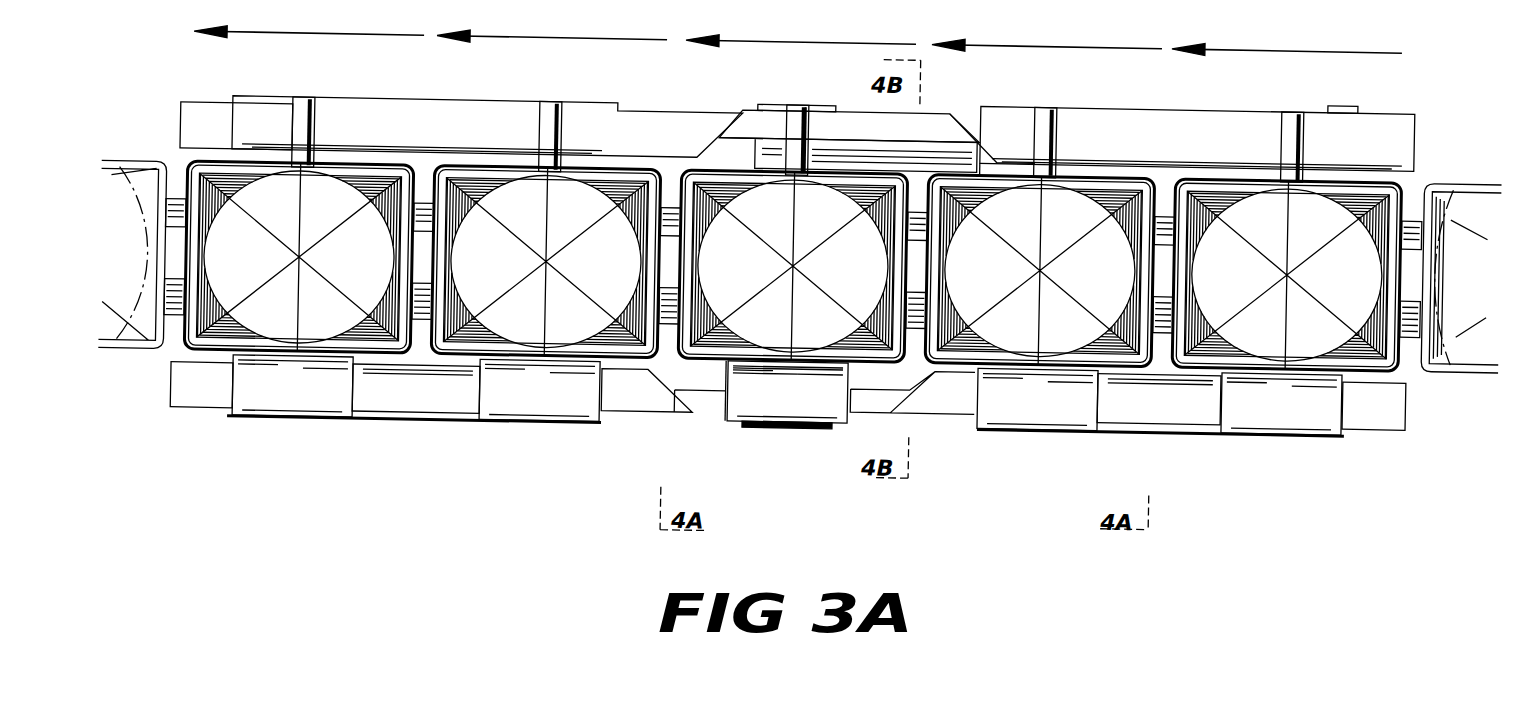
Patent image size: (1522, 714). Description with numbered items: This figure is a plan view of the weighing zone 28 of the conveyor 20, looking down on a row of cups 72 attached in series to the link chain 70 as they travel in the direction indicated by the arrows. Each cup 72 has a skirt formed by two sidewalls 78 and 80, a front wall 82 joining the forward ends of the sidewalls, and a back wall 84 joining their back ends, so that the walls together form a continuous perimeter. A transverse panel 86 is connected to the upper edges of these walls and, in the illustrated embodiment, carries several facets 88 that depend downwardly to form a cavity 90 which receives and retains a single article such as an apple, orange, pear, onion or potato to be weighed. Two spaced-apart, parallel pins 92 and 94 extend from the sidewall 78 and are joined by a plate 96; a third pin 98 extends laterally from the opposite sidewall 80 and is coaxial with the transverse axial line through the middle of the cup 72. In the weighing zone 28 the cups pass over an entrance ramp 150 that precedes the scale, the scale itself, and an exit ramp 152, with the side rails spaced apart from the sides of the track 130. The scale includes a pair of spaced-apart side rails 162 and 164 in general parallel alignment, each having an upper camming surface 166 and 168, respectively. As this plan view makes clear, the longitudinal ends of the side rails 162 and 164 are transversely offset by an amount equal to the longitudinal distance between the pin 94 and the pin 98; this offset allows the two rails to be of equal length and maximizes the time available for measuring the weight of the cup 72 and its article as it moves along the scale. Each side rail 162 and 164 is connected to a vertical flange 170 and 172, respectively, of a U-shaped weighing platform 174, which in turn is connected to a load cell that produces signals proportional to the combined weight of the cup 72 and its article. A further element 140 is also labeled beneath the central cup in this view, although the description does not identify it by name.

The conveyor 20 is at (1425, 154).
The weighing zone 28 is at (808, 503).
The link chain 70 is at (1413, 260).
The cup 72 is at (268, 419).
The sidewall 78 is at (378, 357).
The sidewall 80 is at (228, 158).
The front wall 82 is at (182, 344).
The back wall 84 is at (417, 185).
The transverse panel 86 is at (299, 233).
The facets 88 is at (298, 257).
The cavity 90 is at (298, 256).
The pin 92 is at (733, 372).
The pin 94 is at (853, 370).
The plate 96 is at (809, 399).
The third pin 98 is at (795, 99).
The track 130 is at (1410, 305).
The bottom pad assembly 140 is at (762, 429).
The entrance ramp 150 is at (1147, 428).
The exit ramp 152 is at (403, 428).
The side rail 162 is at (704, 408).
The side rail 164 is at (930, 113).
The upper camming surface 166 is at (720, 392).
The upper camming surface 168 is at (922, 108).
The vertical flange 170 is at (800, 421).
The vertical flange 172 is at (808, 101).
The weighing platform 174 is at (826, 160).